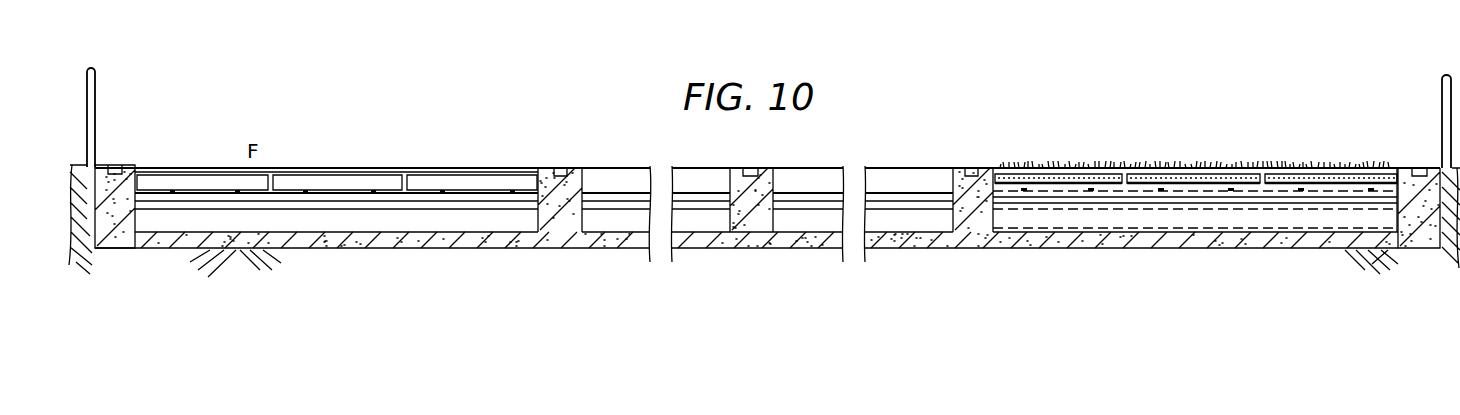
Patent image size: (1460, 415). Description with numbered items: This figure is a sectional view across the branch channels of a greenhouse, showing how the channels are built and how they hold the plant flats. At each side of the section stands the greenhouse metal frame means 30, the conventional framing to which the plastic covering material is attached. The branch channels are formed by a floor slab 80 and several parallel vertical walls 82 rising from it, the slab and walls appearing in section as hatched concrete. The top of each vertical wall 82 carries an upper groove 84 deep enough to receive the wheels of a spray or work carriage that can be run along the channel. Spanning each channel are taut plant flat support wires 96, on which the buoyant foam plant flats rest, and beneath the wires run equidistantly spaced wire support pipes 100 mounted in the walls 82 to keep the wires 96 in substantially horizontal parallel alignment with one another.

The metal frame means 30 is at (92, 92).
The floor slab 80 is at (352, 240).
The vertical walls 82 is at (126, 184).
The upper groove 84 is at (113, 166).
The plant flat support wires 96 is at (237, 192).
The wire support pipes 100 is at (415, 196).